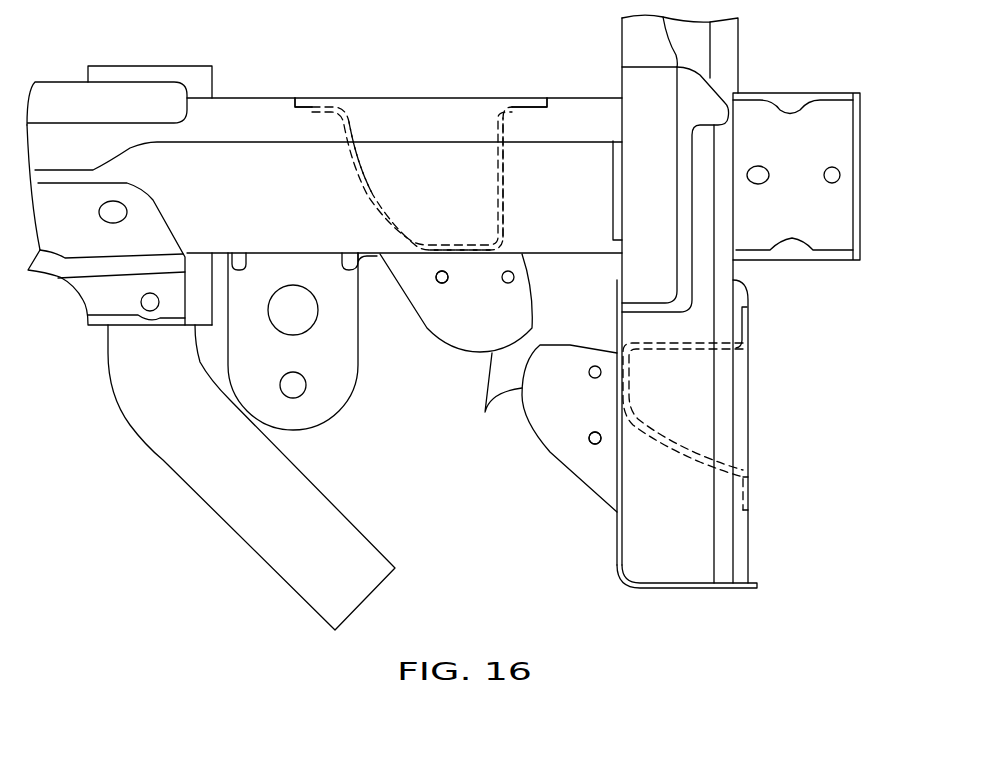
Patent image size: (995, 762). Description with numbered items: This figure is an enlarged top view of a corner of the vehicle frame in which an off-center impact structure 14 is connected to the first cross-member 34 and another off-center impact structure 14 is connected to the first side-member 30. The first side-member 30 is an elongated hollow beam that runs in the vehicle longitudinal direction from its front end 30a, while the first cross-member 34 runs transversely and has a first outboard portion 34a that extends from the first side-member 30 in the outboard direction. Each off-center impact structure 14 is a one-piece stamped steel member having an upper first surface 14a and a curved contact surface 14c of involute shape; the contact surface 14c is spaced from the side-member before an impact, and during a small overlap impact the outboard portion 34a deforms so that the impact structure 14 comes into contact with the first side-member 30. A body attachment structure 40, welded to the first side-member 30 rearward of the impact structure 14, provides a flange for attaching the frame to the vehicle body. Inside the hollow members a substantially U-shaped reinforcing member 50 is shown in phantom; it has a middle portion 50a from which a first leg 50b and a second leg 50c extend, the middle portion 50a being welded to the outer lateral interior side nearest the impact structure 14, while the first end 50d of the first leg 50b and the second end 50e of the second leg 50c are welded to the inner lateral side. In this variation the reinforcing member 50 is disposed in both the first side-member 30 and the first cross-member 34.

The first side-member 30 is at (245, 97).
The front end 30a is at (863, 137).
The first cross-member 34 is at (752, 418).
The first outboard portion 34a is at (693, 588).
The body attachment structure 40 is at (346, 408).
The off-center impact structure 14 is at (441, 344).
The first surface 14a is at (404, 272).
The curved contact surface 14c is at (496, 398).
The reinforcing member 50 is at (372, 211).
The middle portion 50a is at (452, 245).
The first leg 50b is at (360, 176).
The second leg 50c is at (493, 177).
The first end 50d is at (308, 97).
The second end 50e is at (538, 97).